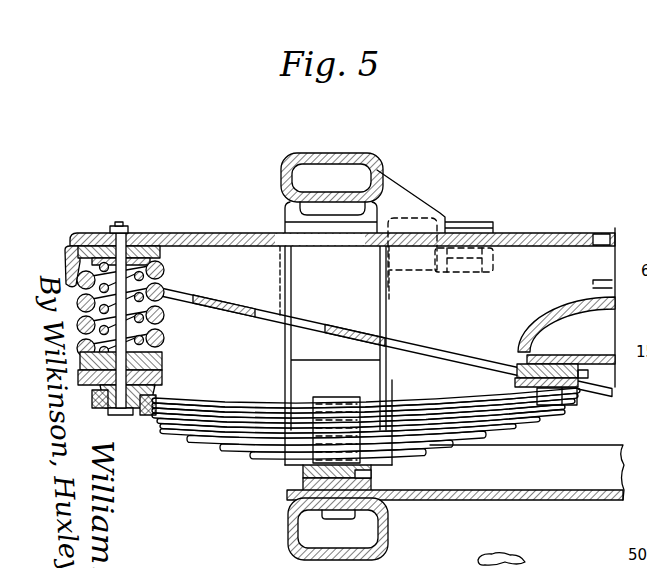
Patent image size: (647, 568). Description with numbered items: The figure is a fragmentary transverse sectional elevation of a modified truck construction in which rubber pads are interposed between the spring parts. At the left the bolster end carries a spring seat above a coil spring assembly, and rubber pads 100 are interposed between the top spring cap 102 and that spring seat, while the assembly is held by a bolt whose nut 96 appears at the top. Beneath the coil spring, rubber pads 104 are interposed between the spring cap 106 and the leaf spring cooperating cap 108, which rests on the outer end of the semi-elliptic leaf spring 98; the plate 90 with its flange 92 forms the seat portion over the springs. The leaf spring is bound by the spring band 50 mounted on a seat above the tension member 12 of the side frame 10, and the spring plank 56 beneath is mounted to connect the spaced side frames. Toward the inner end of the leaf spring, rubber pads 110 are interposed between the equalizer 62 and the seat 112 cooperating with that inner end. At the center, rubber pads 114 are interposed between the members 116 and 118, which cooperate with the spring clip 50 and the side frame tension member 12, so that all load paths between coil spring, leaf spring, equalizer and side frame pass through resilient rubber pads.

The side frame 10 is at (357, 160).
The tension member 12 is at (292, 540).
The spring band 50 is at (323, 427).
The spring plank 56 is at (522, 494).
The equalizer 62 is at (553, 312).
The upper plate 90 is at (132, 238).
The plate flange 92 is at (68, 258).
The nut and bolt 96 is at (120, 222).
The leaf spring 98 is at (205, 420).
The rubber pads 100 is at (150, 250).
The top spring cap 102 is at (160, 254).
The rubber pads 104 is at (165, 377).
The spring cap 106 is at (165, 360).
The leaf spring cooperating cap 108 is at (150, 390).
The rubber pads 110 is at (513, 354).
The seat 112 is at (578, 393).
The rubber pads 114 is at (375, 478).
The member 116 is at (305, 471).
The member 118 is at (303, 484).